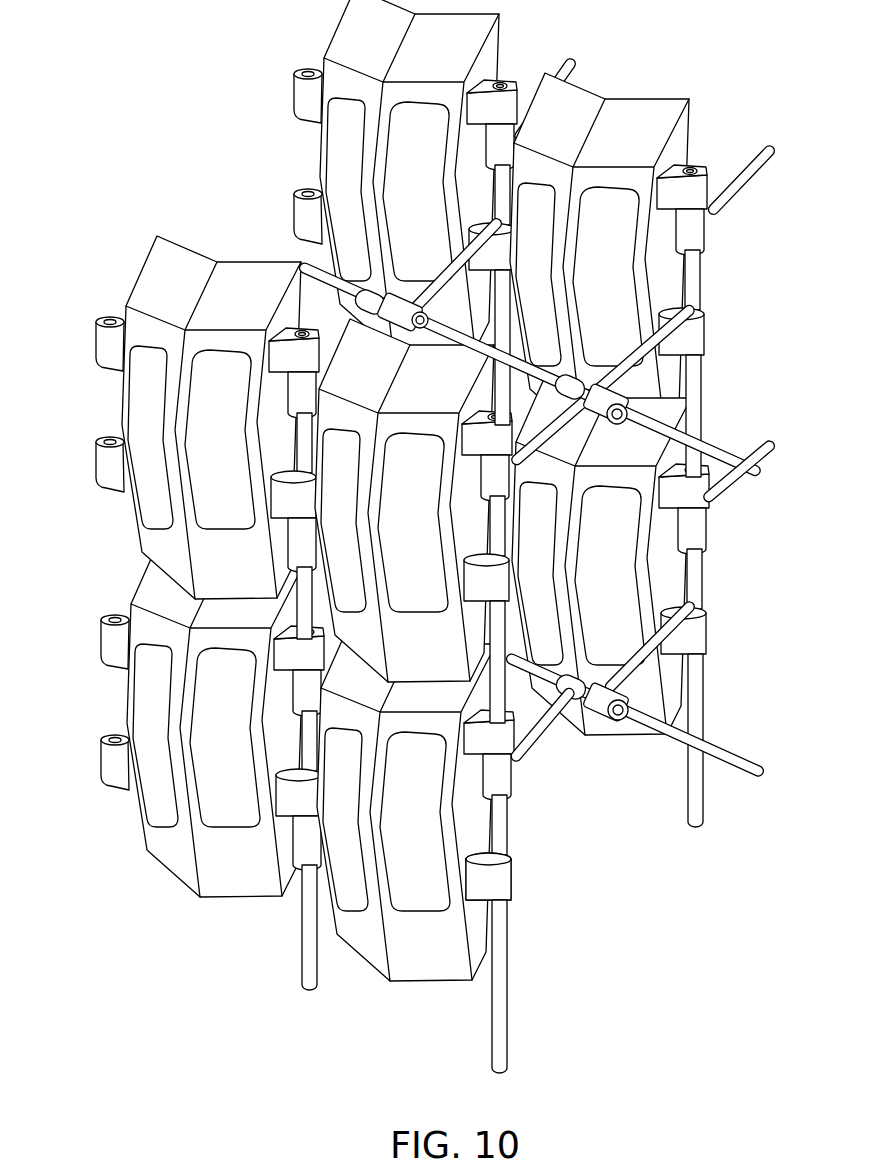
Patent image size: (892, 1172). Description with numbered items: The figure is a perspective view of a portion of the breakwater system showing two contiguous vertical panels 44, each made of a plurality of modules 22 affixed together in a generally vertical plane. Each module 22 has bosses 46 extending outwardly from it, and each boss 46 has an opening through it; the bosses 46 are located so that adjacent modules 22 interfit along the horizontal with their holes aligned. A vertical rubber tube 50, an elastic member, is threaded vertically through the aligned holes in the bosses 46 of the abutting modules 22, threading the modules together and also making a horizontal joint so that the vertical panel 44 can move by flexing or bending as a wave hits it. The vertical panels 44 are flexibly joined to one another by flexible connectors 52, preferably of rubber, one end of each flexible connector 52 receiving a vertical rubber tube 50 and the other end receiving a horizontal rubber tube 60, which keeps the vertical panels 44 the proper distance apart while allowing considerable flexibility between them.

The module 22 is at (667, 115).
The vertical panel 44 is at (598, 707).
The boss 46 is at (500, 883).
The vertical rubber tube 50 is at (498, 970).
The flexible connector 52 is at (533, 733).
The horizontal rubber tube 60 is at (743, 765).